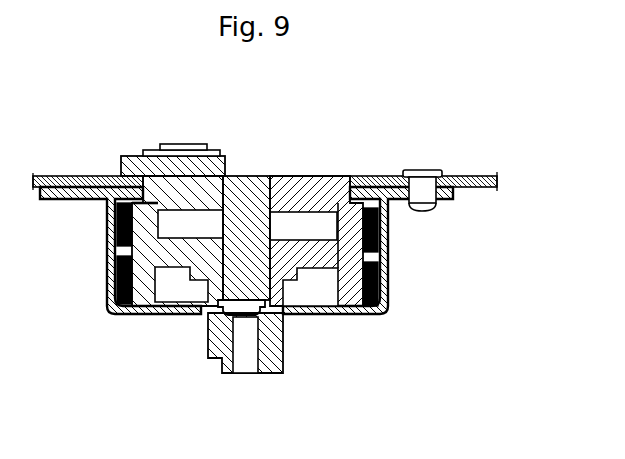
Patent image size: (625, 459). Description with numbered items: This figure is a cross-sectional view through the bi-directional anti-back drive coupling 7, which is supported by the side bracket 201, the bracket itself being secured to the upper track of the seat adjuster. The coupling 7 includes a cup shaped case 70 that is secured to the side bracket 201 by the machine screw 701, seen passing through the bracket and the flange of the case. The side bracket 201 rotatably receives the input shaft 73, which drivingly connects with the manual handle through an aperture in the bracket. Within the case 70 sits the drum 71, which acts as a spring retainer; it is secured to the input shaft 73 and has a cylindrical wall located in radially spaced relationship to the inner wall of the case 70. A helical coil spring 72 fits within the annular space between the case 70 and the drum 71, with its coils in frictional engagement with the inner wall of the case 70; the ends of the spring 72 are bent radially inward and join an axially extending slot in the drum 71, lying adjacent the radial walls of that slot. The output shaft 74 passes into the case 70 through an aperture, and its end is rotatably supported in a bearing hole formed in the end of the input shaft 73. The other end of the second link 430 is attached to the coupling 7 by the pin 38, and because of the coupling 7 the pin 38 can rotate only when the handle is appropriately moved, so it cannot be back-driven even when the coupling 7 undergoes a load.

The anti-back drive coupling 7 is at (197, 317).
The pin 38 is at (178, 148).
The cup shaped case 70 is at (388, 279).
The drum 71 is at (348, 270).
The helical coil spring 72 is at (378, 306).
The input shaft 73 is at (270, 370).
The output shaft 74 is at (243, 210).
The side bracket 201 is at (477, 178).
The second link 430 is at (224, 165).
The machine screw 701 is at (423, 175).